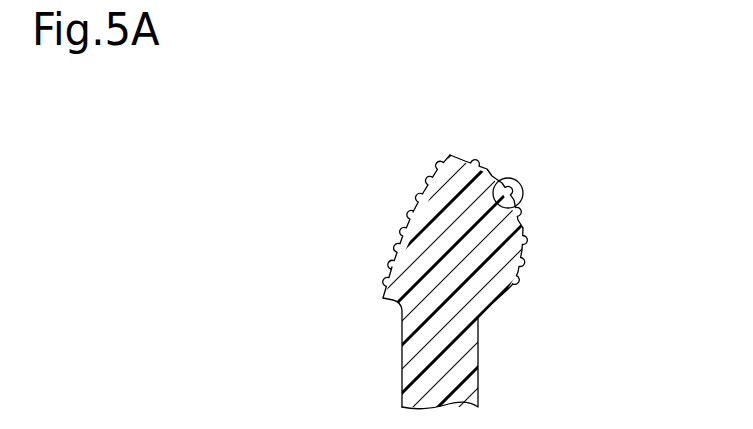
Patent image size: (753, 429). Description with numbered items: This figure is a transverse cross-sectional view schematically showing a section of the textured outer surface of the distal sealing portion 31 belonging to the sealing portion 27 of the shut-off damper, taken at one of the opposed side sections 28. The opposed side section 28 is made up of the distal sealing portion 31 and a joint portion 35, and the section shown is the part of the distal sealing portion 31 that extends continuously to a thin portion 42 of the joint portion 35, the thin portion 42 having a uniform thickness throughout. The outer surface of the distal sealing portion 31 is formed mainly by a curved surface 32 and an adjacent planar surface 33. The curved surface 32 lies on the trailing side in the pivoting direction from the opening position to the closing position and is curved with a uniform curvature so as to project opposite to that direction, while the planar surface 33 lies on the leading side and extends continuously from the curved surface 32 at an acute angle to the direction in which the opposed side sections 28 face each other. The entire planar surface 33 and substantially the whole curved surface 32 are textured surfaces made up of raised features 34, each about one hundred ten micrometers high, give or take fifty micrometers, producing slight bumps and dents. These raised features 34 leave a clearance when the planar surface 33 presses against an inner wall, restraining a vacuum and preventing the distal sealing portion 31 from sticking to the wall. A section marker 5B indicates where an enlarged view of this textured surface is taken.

The distal sealing portion 31 is at (466, 163).
The curved surface 32 is at (519, 277).
The planar surface 33 is at (391, 262).
The raised features 34 is at (460, 159).
The thin portion 42 is at (348, 352).
The joint portion 35 is at (405, 374).
The opposed side section 28 is at (496, 363).
The sealing portion 27 is at (476, 377).
The detail region shown in FIG. 5B is at (521, 181).